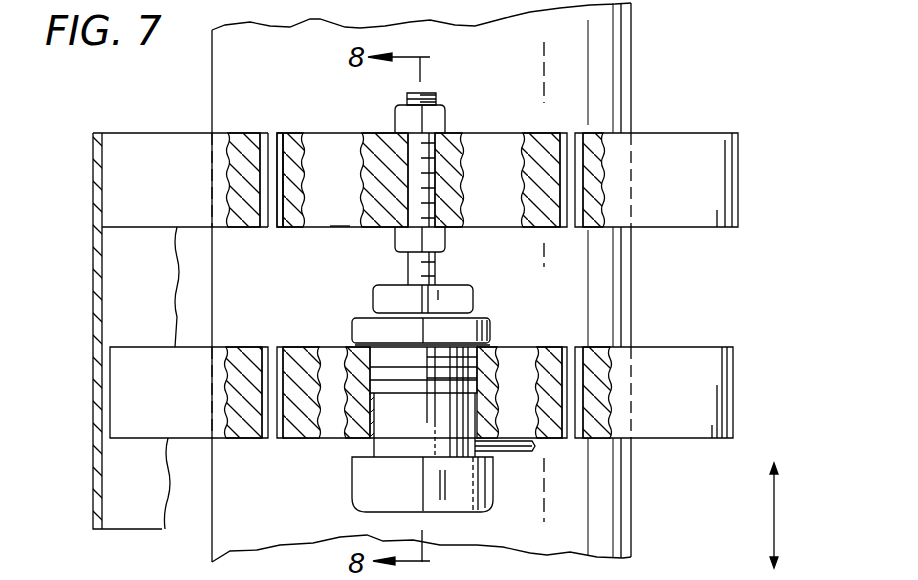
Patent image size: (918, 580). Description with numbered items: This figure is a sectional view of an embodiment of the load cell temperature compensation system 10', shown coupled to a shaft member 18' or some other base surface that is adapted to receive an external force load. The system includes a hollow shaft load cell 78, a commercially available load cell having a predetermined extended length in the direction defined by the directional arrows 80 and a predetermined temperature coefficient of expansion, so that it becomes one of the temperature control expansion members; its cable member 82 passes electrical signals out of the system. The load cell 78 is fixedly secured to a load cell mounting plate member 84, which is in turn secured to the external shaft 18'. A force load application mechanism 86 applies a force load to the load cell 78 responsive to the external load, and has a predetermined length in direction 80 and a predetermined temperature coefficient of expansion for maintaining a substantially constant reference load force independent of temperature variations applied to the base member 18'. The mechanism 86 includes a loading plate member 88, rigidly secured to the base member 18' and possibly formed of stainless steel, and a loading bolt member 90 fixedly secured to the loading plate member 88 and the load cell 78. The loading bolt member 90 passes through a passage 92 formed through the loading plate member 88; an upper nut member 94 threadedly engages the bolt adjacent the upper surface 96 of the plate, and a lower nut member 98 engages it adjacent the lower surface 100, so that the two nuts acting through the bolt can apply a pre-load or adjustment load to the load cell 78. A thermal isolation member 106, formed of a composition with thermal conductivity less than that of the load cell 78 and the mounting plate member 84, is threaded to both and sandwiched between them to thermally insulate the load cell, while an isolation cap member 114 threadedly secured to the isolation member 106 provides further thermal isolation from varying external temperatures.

The shaft member 18' is at (458, 282).
The load cell temperature compensation system 10' is at (746, 261).
The loading plate member 88 is at (735, 180).
The load cell mounting plate member 84 is at (693, 434).
The force load application mechanism 86 is at (136, 331).
The directional arrows 80 is at (773, 522).
The cable member 82 is at (505, 470).
The loading bolt member 90 is at (431, 96).
The passage 92 is at (412, 171).
The upper nut member 94 is at (402, 113).
The upper surface 96 is at (320, 141).
The lower nut member 98 is at (405, 242).
The lower surface 100 is at (338, 228).
The hollow shaft load cell 78 is at (452, 286).
The thermal isolation member 106 is at (480, 330).
The isolation cap member 114 is at (468, 504).